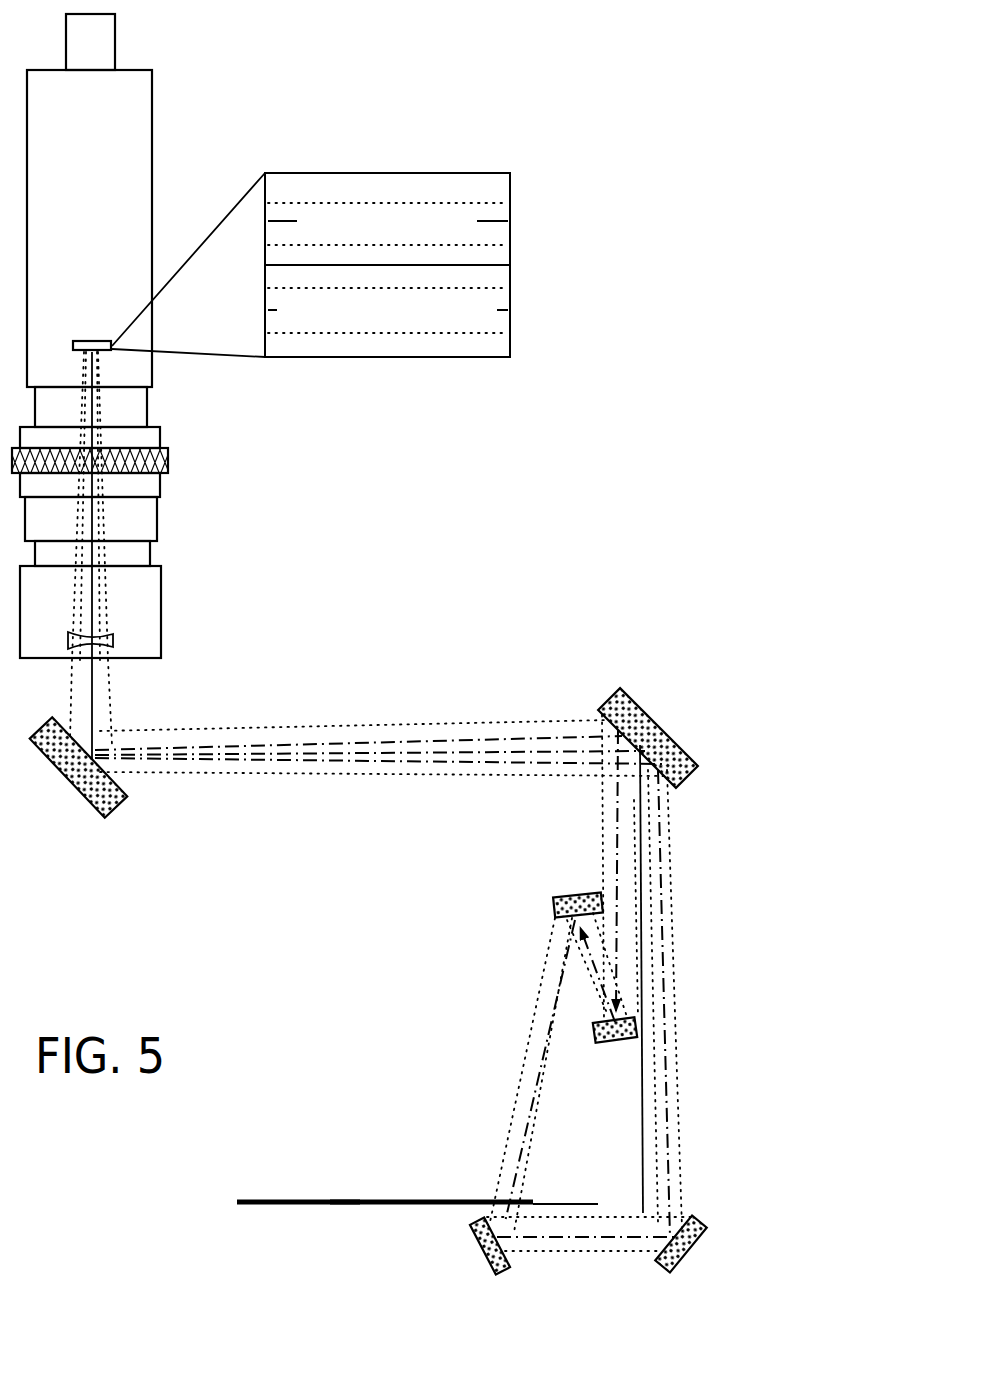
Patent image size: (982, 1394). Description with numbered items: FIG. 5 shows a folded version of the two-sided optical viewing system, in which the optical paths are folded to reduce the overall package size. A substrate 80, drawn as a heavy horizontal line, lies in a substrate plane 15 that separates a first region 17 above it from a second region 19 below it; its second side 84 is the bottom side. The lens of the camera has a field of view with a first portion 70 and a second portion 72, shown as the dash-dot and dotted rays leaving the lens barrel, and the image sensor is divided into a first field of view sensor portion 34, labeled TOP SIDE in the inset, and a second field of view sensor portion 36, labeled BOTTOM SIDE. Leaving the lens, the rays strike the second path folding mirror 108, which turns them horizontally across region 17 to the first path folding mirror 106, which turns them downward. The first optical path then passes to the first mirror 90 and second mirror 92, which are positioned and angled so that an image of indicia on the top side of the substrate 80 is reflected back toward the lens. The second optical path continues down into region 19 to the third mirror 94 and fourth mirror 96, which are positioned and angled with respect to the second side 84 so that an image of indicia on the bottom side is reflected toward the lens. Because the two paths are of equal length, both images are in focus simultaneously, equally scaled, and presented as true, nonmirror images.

The first field of view sensor portion 34 is at (510, 212).
The second field of view sensor portion 36 is at (510, 320).
The first portion of field of view 70 is at (470, 735).
The second portion of field of view 72 is at (430, 770).
The first path folding mirror 106 is at (663, 735).
The second path folding mirror 108 is at (90, 800).
The first region 17 is at (348, 822).
The first mirror 90 is at (553, 898).
The second mirror 92 is at (594, 1038).
The substrate 80 is at (267, 1207).
The second side 84 is at (346, 1208).
The substrate plane 15 is at (573, 1203).
The third mirror 94 is at (482, 1248).
The fourth mirror 96 is at (694, 1243).
The second region 19 is at (598, 1309).